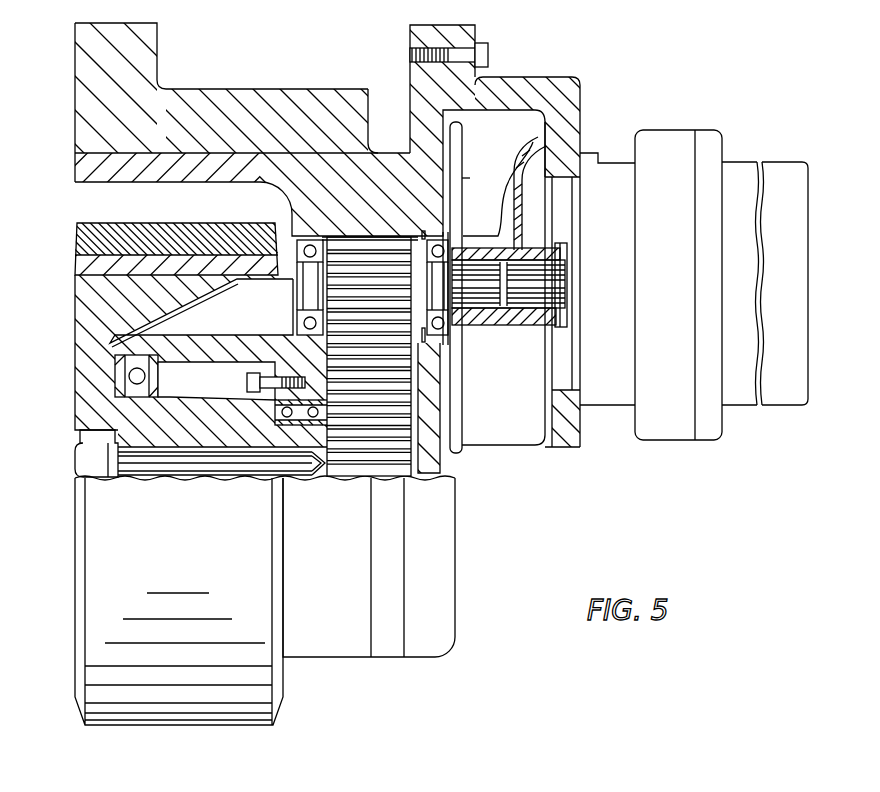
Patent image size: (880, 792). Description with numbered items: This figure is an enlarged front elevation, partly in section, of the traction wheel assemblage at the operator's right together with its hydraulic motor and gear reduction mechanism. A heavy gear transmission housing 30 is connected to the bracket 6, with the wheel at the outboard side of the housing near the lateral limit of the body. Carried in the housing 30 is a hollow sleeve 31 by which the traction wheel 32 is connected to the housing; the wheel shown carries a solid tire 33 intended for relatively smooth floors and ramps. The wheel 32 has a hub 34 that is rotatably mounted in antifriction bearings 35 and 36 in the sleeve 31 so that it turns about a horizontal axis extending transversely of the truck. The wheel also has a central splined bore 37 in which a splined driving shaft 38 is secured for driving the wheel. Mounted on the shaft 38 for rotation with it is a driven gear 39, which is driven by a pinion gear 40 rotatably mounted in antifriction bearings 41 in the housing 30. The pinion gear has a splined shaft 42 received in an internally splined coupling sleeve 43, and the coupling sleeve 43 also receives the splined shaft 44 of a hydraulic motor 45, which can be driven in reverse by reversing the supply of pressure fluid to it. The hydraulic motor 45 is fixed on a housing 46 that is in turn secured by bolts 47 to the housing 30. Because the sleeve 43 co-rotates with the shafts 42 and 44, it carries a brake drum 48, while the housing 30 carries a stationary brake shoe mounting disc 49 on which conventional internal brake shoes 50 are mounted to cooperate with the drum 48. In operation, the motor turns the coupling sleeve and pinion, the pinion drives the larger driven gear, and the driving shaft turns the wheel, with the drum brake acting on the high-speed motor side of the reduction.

The bracket 6 is at (224, 89).
The gear transmission housing 30 is at (249, 178).
The hollow sleeve 31 is at (205, 338).
The traction wheel 32 is at (160, 546).
The solid tire 33 is at (77, 247).
The hub 34 is at (183, 398).
The antifriction bearing 35 is at (158, 374).
The antifriction bearing 36 is at (275, 412).
The central splined bore 37 is at (207, 440).
The splined driving shaft 38 is at (228, 467).
The driven gear 39 is at (368, 462).
The pinion gear 40 is at (369, 265).
The antifriction bearings 41 is at (452, 238).
The splined shaft 42 is at (480, 326).
The coupling sleeve 43 is at (510, 326).
The splined shaft 44 is at (536, 326).
The hydraulic motor 45 is at (740, 278).
The housing 46 is at (583, 118).
The bolts 47 is at (490, 54).
The brake drum 48 is at (514, 150).
The brake shoe mounting disc 49 is at (468, 180).
The internal brake shoes 50 is at (463, 161).